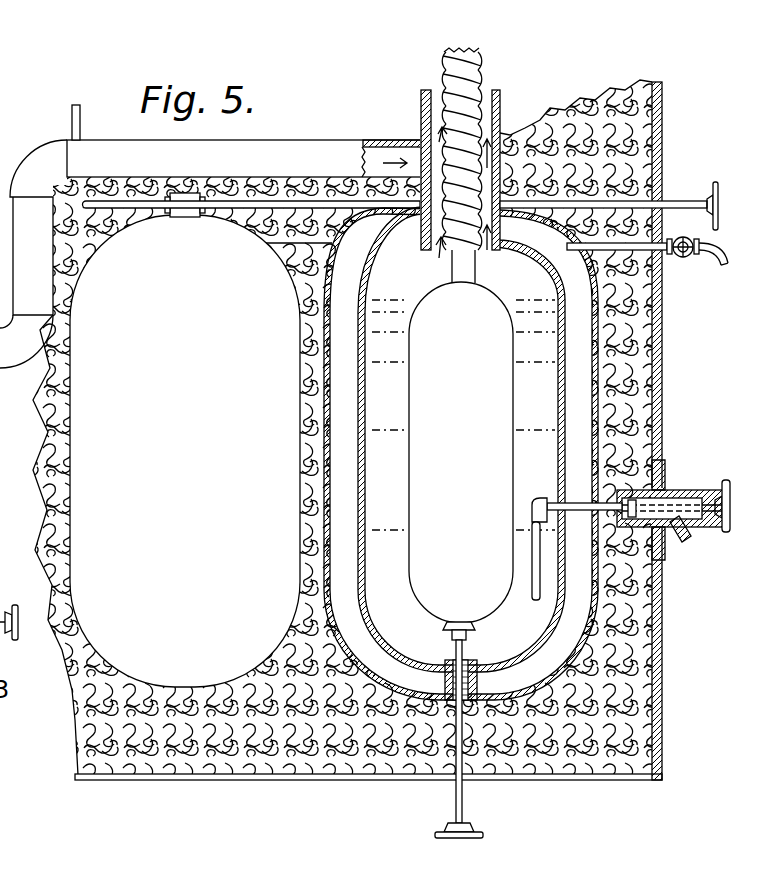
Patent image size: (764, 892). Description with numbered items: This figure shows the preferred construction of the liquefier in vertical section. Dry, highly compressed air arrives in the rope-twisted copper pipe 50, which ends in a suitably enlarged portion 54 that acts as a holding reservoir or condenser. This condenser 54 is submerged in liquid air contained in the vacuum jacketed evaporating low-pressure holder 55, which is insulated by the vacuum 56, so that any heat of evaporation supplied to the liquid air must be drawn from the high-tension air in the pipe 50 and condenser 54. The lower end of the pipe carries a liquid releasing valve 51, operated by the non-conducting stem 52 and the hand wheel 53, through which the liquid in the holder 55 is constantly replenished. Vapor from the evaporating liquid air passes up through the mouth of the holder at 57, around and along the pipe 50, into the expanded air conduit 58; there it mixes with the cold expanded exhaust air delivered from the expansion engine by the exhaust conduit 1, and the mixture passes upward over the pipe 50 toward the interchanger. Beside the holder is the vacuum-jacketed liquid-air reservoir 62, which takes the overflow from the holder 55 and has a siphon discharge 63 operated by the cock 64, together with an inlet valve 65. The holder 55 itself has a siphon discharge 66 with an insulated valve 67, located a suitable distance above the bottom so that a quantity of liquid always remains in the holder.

The exhaust conduit 1 is at (32, 240).
The rope-twisted copper pipe 50 is at (468, 116).
The liquid releasing valve 51 is at (473, 630).
The non-conducting stem 52 is at (462, 790).
The hand wheel 53 is at (483, 835).
The enlarged portion 54 is at (490, 371).
The vacuum jacketed evaporating low-pressure holder 55 is at (564, 300).
The vacuum 56 is at (573, 583).
The mouth of the holder 57 is at (437, 190).
The expanded air conduit 58 is at (500, 86).
The vacuum-jacketed liquid-air reservoir 62 is at (77, 464).
The siphon discharge 63 is at (702, 239).
The cock 64 is at (704, 266).
The inlet valve 65 is at (712, 185).
The siphon discharge 66 is at (680, 538).
The insulated valve 67 is at (666, 478).